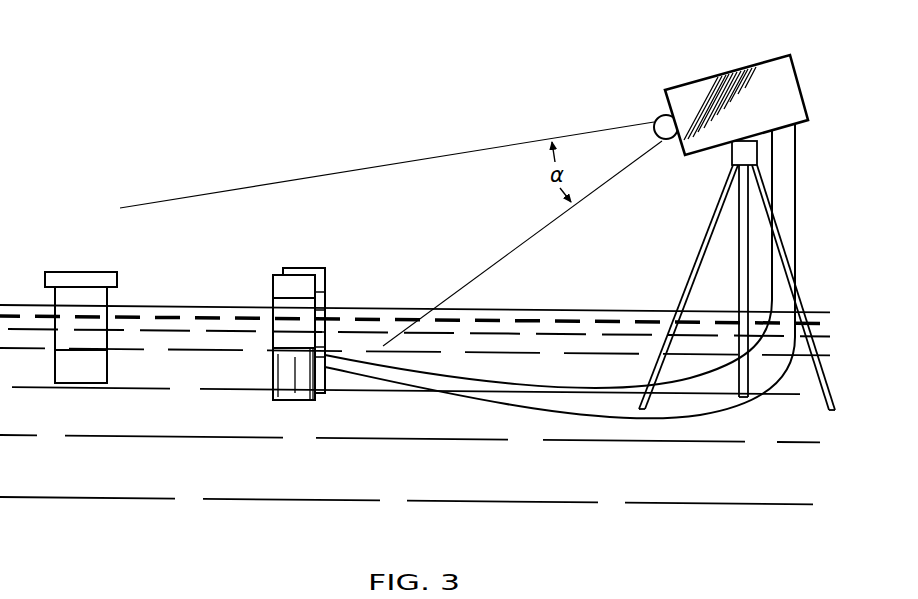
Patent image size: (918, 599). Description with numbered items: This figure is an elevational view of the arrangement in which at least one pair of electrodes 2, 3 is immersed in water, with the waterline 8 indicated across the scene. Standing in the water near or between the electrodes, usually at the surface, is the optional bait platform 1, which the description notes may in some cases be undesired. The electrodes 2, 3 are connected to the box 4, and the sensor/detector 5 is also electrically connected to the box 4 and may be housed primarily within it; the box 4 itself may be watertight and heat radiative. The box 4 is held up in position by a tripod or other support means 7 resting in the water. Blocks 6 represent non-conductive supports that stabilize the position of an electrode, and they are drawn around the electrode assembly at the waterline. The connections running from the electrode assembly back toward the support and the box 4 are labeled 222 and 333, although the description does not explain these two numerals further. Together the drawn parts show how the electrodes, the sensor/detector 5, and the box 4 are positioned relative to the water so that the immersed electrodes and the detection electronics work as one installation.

The bait platform 1 is at (62, 271).
The electrode 2 is at (333, 380).
The electrode 3 is at (272, 373).
The box 4 is at (704, 88).
The sensor/detector 5 is at (667, 142).
The non-conductive support block 6 is at (269, 287).
The tripod or other support means 7 is at (656, 345).
The waterline 8 is at (571, 306).
The inner cable 222 is at (772, 176).
The outer cable 333 is at (802, 158).